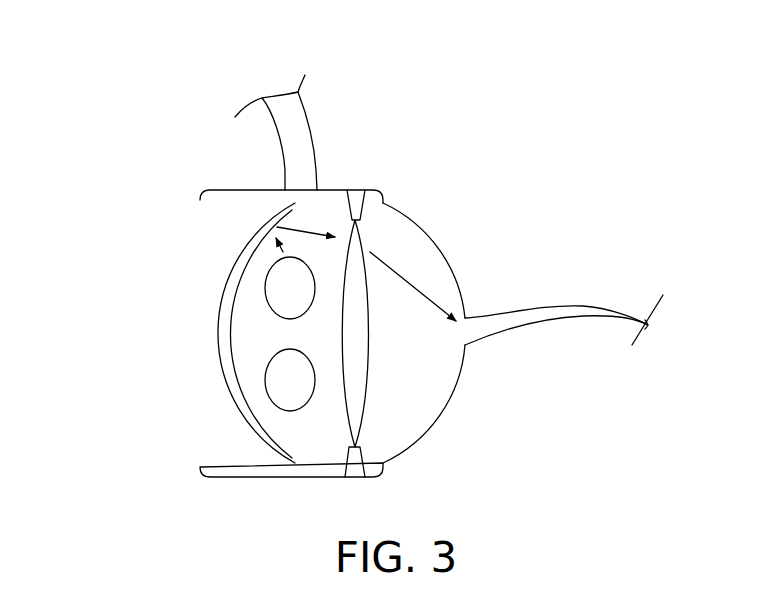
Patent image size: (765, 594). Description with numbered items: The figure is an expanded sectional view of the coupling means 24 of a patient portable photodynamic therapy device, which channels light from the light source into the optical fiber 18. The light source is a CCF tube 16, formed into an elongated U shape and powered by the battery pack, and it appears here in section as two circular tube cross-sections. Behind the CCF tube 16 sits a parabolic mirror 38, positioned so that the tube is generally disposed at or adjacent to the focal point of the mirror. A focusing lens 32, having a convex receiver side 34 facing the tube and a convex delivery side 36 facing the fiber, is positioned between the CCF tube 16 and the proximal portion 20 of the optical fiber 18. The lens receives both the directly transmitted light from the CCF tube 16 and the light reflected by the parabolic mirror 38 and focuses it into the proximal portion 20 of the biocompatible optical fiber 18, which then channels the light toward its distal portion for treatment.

The coupling means 24 is at (140, 130).
The CCF tube 16 is at (278, 302).
The parabolic mirror 38 is at (243, 417).
The focusing lens 32 is at (353, 307).
The convex receiver side 34 is at (347, 406).
The convex delivery side 36 is at (368, 387).
The proximal portion 20 is at (505, 307).
The optical fiber 18 is at (595, 307).